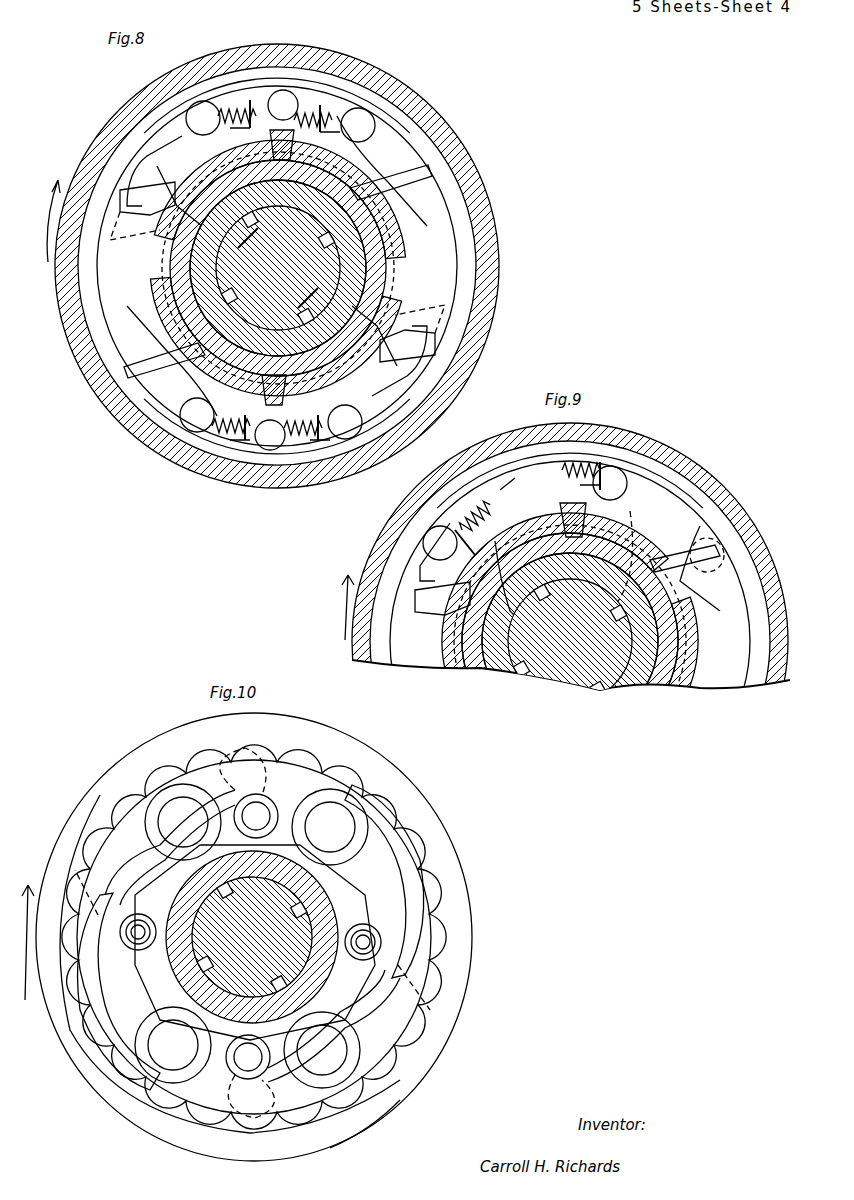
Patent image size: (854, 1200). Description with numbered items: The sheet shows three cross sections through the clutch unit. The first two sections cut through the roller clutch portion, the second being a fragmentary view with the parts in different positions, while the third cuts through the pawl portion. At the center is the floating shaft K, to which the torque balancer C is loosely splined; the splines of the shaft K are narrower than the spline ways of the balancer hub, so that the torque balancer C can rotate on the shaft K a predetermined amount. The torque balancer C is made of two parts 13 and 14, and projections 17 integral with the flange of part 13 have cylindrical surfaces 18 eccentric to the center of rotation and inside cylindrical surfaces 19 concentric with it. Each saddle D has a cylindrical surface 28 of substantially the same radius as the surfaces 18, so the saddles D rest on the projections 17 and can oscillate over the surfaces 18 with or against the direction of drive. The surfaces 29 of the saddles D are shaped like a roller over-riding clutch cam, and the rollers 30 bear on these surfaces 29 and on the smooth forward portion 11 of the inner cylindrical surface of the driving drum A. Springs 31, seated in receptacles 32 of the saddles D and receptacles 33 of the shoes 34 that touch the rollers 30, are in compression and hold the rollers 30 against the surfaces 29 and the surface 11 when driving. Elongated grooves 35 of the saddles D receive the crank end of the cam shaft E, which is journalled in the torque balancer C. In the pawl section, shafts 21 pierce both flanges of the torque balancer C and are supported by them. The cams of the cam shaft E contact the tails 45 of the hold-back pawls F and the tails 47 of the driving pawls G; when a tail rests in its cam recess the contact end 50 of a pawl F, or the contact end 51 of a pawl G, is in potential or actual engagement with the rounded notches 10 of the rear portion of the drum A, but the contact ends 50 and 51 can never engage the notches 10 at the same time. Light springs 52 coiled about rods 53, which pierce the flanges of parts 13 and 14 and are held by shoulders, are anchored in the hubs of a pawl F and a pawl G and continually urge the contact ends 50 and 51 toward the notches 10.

In FIG. 10, the rounded notches 10 is at (405, 1048).
In FIG. 8, the forward portion of inner cylindrical surface 11 is at (90, 355).
In FIG. 10, the part of torque balancer 13 is at (250, 770).
In FIG. 10, the part of torque balancer 14 is at (185, 892).
In FIG. 8, the projections 17 is at (395, 150).
In FIG. 9, the projections 17 is at (690, 512).
In FIG. 8, the cylindrical surfaces 18 is at (360, 165).
In FIG. 9, the cylindrical surfaces 18 is at (672, 500).
In FIG. 8, the inside cylindrical surfaces 19 is at (370, 212).
In FIG. 9, the inside cylindrical surfaces 19 is at (700, 540).
In FIG. 10, the shafts 21 is at (180, 820).
In FIG. 8, the cylindrical surface 28 is at (195, 195).
In FIG. 9, the cylindrical surface 28 is at (470, 600).
In FIG. 8, the surfaces 29 is at (160, 145).
In FIG. 9, the surfaces 29 is at (430, 585).
In FIG. 8, the rollers 30 is at (200, 118).
In FIG. 9, the rollers 30 is at (440, 543).
In FIG. 8, the springs 31 is at (250, 100).
In FIG. 9, the springs 31 is at (462, 520).
In FIG. 8, the receptacles 32 is at (296, 100).
In FIG. 9, the receptacles 32 is at (488, 500).
In FIG. 8, the receptacles 33 is at (238, 126).
In FIG. 9, the receptacles 33 is at (505, 485).
In FIG. 8, the shoes 34 is at (222, 118).
In FIG. 9, the shoes 34 is at (470, 530).
In FIG. 8, the elongated grooves 35 is at (286, 100).
In FIG. 9, the elongated grooves 35 is at (535, 470).
In FIG. 10, the tails of hold-back pawls 45 is at (280, 790).
In FIG. 10, the tails of driving pawls 47 is at (222, 793).
In FIG. 10, the contact ends of pawls F 50 is at (400, 880).
In FIG. 10, the contact ends of pawls G 51 is at (85, 850).
In FIG. 10, the light springs 52 is at (120, 934).
In FIG. 10, the rods 53 is at (140, 940).
In FIG. 8, the driving drum A is at (100, 150).
In FIG. 9, the driving drum A is at (360, 635).
In FIG. 10, the driving drum A is at (275, 735).
In FIG. 8, the torque balancer C is at (350, 278).
In FIG. 9, the torque balancer C is at (650, 637).
In FIG. 10, the torque balancer C is at (445, 915).
In FIG. 8, the saddle D is at (277, 266).
In FIG. 9, the saddle D is at (570, 571).
In FIG. 8, the cam shaft E is at (262, 148).
In FIG. 9, the cam shaft E is at (555, 522).
In FIG. 10, the hold-back pawls F is at (345, 790).
In FIG. 10, the driving pawls G is at (150, 820).
In FIG. 8, the floating shaft K is at (300, 252).
In FIG. 9, the floating shaft K is at (600, 660).
In FIG. 10, the floating shaft K is at (258, 925).